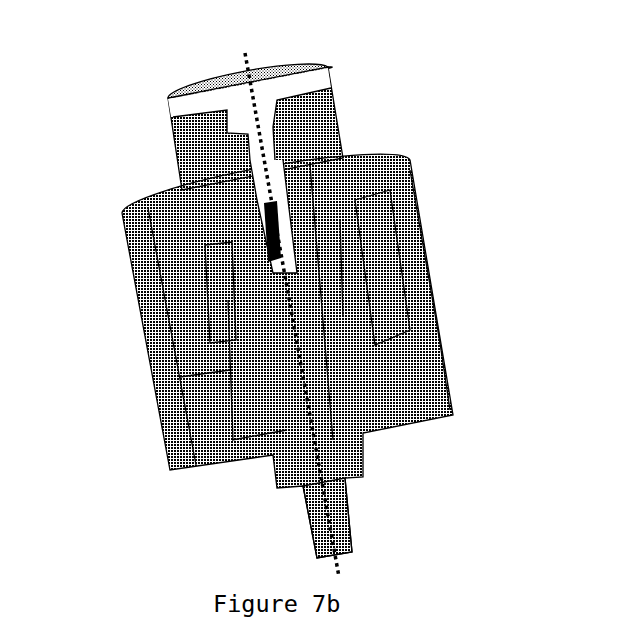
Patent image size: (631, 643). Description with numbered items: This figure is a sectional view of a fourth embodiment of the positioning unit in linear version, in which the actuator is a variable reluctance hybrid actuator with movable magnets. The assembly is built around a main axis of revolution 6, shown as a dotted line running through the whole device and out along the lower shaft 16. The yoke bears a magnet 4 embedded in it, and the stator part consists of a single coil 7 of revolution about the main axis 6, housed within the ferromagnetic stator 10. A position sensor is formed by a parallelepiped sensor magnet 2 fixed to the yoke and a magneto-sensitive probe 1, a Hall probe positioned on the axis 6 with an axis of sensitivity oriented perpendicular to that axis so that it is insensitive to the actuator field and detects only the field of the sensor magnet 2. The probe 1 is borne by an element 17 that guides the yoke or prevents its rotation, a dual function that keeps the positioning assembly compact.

The magneto-sensitive probe 1 is at (268, 237).
The magnet 2 is at (255, 258).
The magnet 4 is at (217, 283).
The axis of axisymmetry 6 is at (327, 523).
The coil 7 is at (190, 305).
The ferromagnetic stator 10 is at (382, 258).
The shaft 16 is at (315, 523).
The guiding element 17 is at (248, 160).